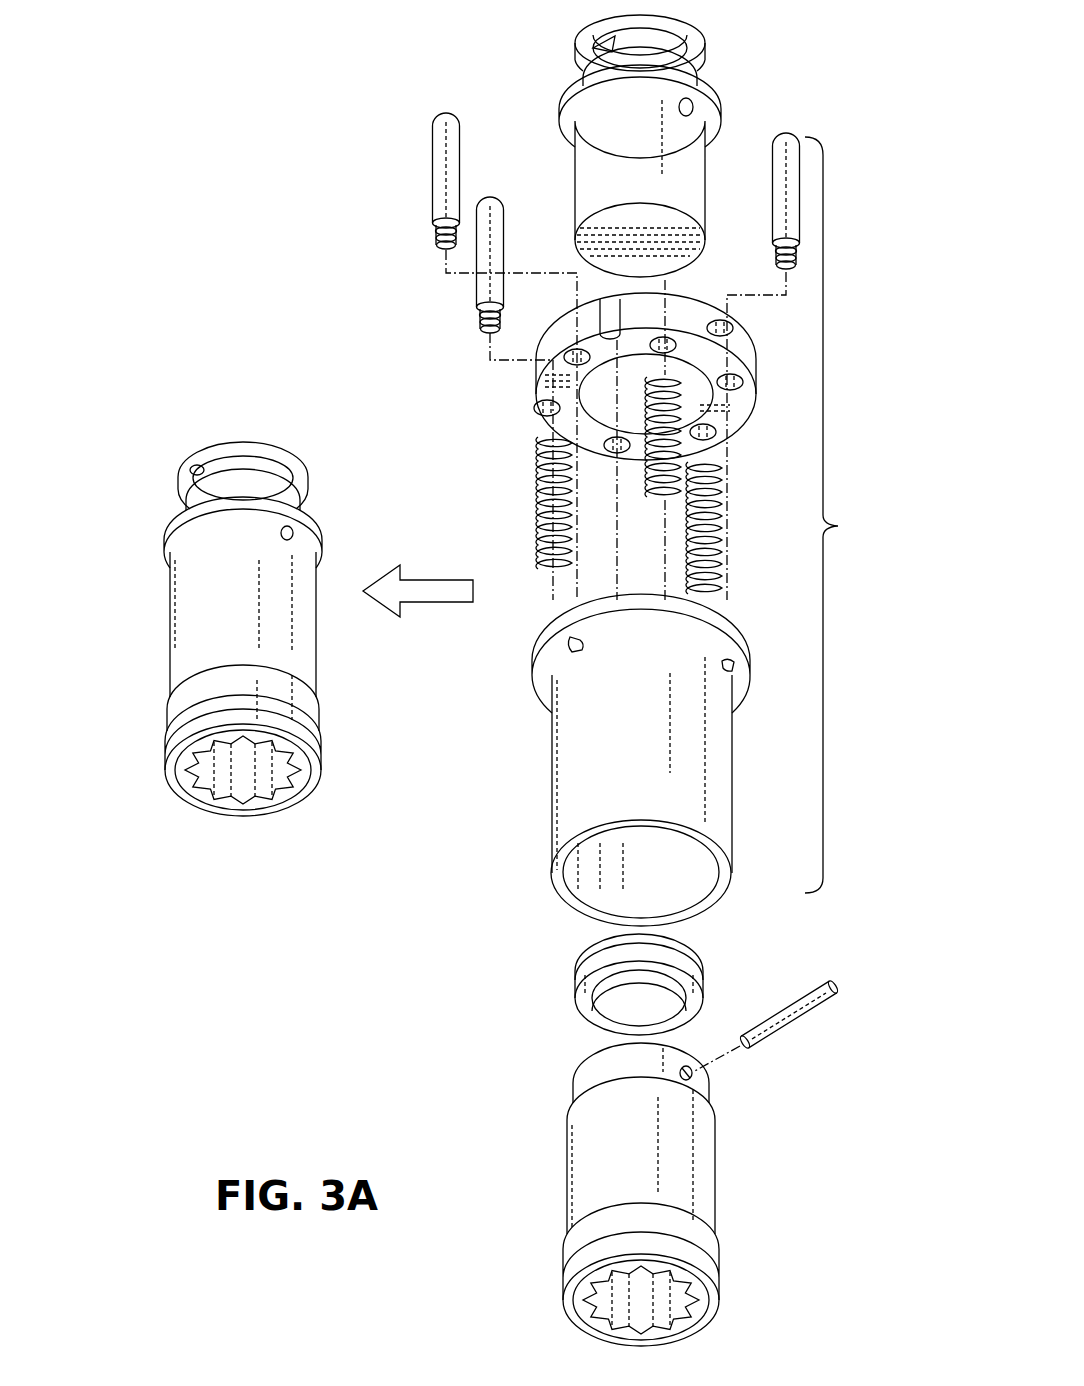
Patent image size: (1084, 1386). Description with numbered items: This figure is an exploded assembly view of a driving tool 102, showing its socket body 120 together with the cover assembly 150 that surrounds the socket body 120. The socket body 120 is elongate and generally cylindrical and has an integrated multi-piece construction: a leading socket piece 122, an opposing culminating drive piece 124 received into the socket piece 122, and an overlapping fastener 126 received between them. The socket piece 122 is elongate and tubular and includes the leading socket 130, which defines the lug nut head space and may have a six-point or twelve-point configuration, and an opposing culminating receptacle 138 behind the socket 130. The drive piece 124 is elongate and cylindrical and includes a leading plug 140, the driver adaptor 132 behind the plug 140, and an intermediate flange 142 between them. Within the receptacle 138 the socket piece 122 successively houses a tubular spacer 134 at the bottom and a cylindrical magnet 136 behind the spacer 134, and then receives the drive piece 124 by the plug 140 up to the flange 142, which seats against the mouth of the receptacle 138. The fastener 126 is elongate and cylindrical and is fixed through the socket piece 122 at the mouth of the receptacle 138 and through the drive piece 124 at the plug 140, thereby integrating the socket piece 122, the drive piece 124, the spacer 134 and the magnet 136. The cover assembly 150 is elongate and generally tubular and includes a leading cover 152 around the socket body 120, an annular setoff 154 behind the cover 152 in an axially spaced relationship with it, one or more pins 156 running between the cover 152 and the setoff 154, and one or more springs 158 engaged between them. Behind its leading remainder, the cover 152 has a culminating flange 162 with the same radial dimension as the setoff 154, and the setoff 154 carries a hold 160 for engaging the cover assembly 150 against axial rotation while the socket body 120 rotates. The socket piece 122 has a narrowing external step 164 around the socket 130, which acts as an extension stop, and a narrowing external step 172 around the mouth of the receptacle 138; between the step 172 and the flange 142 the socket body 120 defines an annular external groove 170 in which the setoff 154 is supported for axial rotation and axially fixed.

The driving tool 102 is at (301, 265).
The socket body 120 is at (223, 438).
The socket piece 122 is at (683, 1333).
The drive piece 124 is at (690, 25).
The fastener 126 is at (834, 1000).
The socket 130 is at (720, 1265).
The driver adaptor 132 is at (710, 52).
The spacer 134 is at (700, 978).
The magnet 136 is at (705, 953).
The receptacle 138 is at (706, 1064).
The plug 140 is at (705, 217).
The flange 142 is at (723, 97).
The cover assembly 150 is at (844, 226).
The cover 152 is at (575, 922).
The setoff 154 is at (532, 365).
The pins 156 is at (435, 135).
The springs 158 is at (537, 460).
The hold 160 is at (487, 356).
The flange 162 is at (570, 648).
The external step 164 is at (570, 1222).
The groove 170 is at (165, 532).
The external step 172 is at (575, 1094).